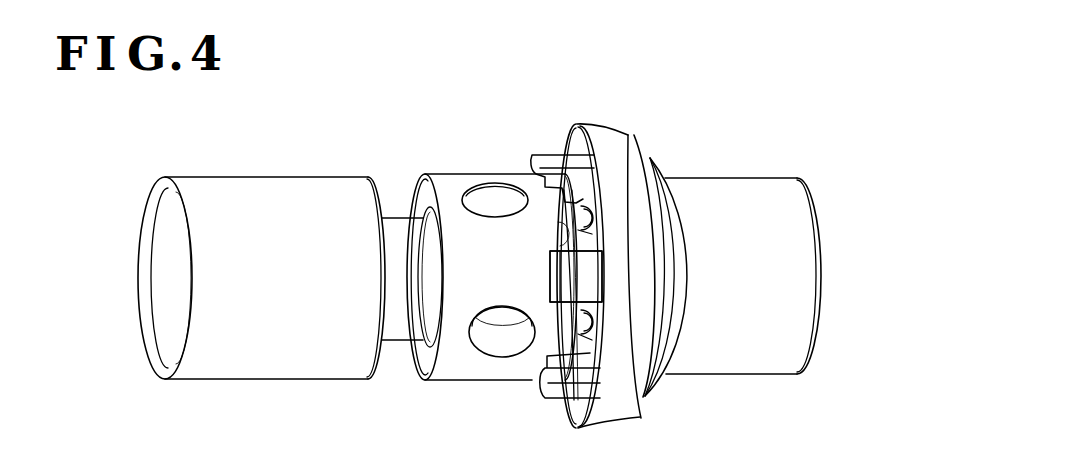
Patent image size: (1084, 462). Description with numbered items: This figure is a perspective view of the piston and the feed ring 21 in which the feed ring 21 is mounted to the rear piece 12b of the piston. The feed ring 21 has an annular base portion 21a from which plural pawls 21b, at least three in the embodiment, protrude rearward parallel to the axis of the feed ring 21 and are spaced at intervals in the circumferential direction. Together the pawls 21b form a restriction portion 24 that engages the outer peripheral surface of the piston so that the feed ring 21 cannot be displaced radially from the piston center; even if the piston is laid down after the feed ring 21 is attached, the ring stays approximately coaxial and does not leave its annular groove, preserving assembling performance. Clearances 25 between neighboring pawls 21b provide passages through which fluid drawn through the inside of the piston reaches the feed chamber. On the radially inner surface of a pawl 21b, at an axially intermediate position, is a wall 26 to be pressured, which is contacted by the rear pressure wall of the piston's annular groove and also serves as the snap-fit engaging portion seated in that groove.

The rear piece 12b is at (271, 360).
The feed ring 21 is at (628, 129).
The annular base portion 21a is at (630, 168).
The pawl 21b is at (583, 283).
The restriction portion 24 is at (576, 276).
The clearance 25 is at (562, 233).
The wall to be pressured 26 is at (556, 194).